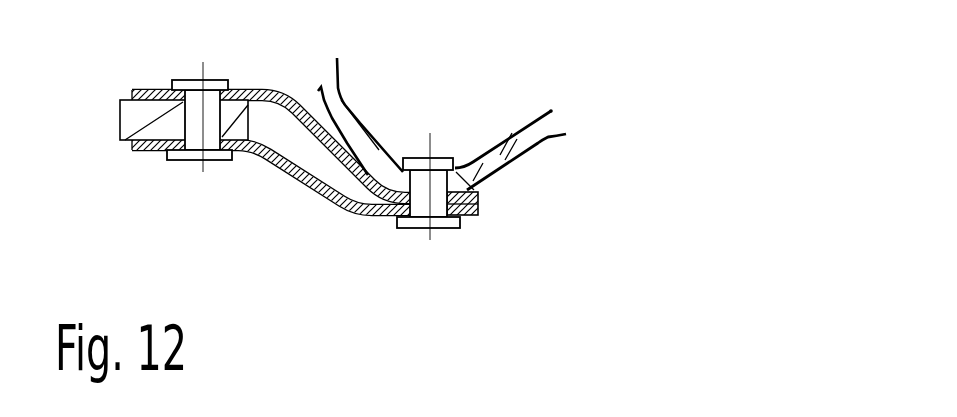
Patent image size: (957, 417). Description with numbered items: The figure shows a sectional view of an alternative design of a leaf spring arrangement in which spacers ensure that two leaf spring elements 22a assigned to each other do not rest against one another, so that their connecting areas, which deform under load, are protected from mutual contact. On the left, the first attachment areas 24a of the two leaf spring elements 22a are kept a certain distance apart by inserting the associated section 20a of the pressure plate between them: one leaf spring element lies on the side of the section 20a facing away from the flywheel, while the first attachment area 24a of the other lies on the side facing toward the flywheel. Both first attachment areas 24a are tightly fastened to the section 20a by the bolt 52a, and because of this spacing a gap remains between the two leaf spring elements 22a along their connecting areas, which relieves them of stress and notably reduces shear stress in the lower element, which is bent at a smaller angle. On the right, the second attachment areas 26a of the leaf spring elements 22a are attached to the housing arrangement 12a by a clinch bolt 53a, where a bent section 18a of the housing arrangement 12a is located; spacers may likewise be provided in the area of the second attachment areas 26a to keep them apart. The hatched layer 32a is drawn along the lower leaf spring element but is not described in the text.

The housing arrangement 12a is at (552, 112).
The bent section of the housing arrangement 18a is at (507, 160).
The section of the pressure plate 20a is at (128, 125).
The leaf spring element 22a is at (303, 89).
The first attachment area 24a is at (147, 91).
The second attachment area 26a is at (377, 218).
The lower plate / sheath 32a is at (365, 138).
The bolt 52a is at (212, 105).
The clinch bolt 53a is at (436, 200).